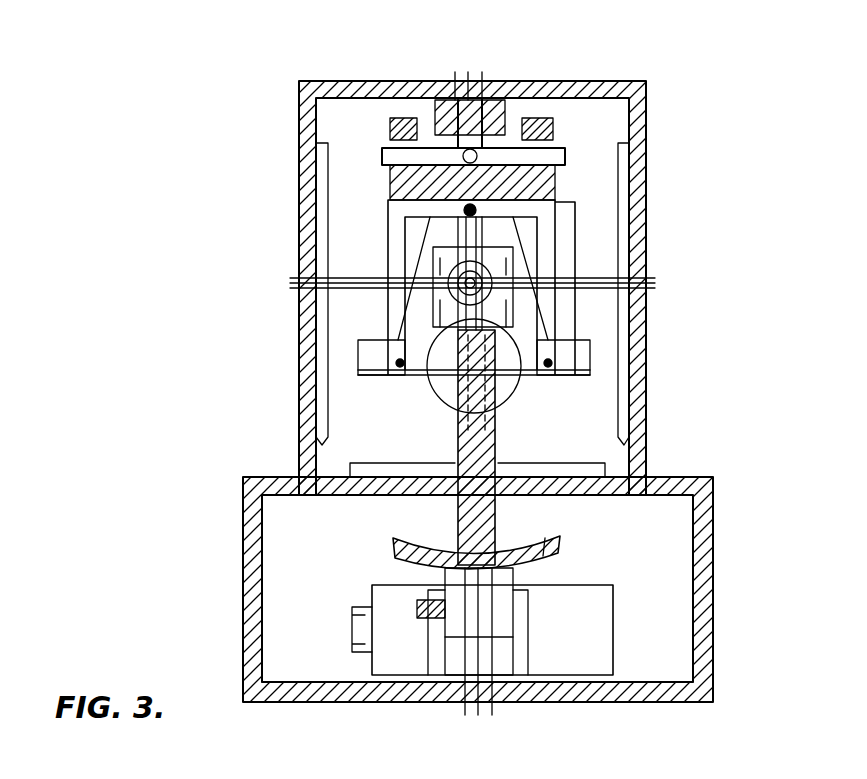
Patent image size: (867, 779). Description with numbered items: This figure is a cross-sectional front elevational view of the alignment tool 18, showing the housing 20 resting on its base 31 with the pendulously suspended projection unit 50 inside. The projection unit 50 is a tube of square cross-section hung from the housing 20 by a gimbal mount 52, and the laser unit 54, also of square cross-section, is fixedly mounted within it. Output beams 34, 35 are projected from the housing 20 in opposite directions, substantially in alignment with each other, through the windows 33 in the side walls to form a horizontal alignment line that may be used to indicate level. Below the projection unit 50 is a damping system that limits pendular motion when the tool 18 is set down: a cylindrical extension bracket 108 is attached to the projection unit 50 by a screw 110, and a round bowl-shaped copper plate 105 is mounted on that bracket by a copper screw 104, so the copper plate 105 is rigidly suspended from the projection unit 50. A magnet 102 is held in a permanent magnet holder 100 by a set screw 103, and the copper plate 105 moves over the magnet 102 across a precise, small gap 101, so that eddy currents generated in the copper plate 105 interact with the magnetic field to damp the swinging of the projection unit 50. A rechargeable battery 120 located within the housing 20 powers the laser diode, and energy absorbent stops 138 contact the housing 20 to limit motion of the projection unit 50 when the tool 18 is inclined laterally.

The alignment tool 18 is at (287, 712).
The housing 20 is at (357, 78).
The base 31 is at (392, 702).
The windows 33 is at (322, 388).
The output beam 34 is at (605, 278).
The output beam 35 is at (363, 280).
The projection unit 50 is at (590, 224).
The gimbal mount 52 is at (508, 140).
The laser unit 54 is at (433, 318).
The permanent magnet holder 100 is at (437, 663).
The gap 101 is at (513, 572).
The magnet 102 is at (500, 625).
The set screw 103 is at (418, 620).
The copper screw 104 is at (495, 545).
The copper plate 105 is at (560, 550).
The cylindrical extension bracket 108 is at (456, 520).
The screw 110 is at (490, 380).
The rechargeable battery 120 is at (593, 632).
The energy absorbent stops 138 is at (372, 375).